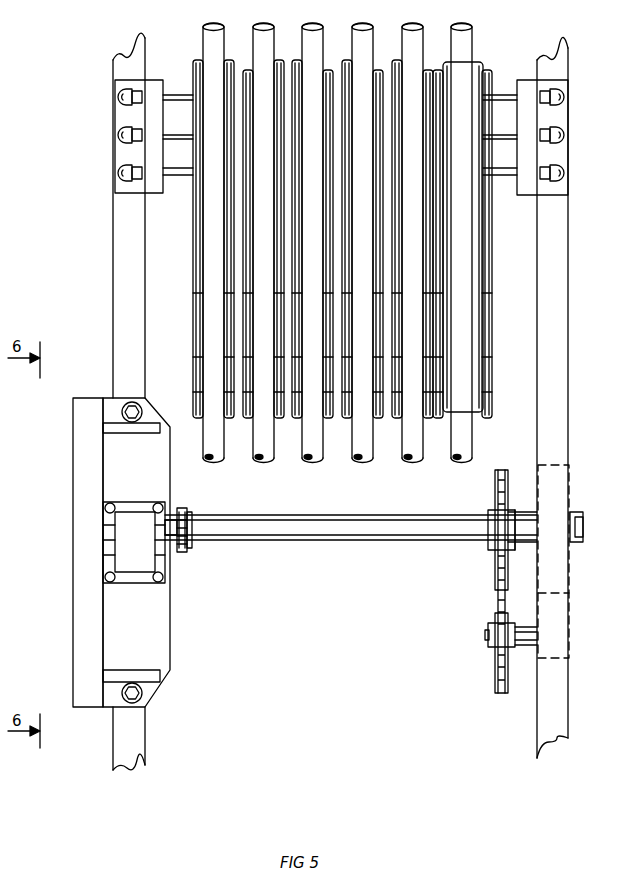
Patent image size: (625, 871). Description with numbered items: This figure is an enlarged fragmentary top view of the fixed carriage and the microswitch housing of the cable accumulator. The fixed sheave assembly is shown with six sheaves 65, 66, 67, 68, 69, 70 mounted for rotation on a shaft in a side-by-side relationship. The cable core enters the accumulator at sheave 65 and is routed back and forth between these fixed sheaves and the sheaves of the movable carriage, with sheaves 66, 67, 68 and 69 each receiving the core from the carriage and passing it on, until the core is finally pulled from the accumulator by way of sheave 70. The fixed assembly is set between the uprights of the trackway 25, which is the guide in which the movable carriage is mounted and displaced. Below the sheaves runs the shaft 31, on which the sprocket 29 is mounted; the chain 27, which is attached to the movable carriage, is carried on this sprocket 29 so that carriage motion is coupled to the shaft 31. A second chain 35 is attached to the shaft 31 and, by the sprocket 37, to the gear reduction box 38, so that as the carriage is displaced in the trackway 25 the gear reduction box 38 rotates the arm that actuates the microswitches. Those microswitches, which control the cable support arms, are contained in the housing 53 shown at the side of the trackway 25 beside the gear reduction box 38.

The trackway 25 is at (145, 247).
The chain 27 is at (497, 668).
The sprocket 29 is at (497, 565).
The shaft 31 is at (290, 540).
The chain 35 is at (185, 506).
The sprocket 37 is at (190, 550).
The gear reduction box 38 is at (128, 517).
The housing 53 is at (73, 617).
The sheave 65 is at (472, 422).
The sheave 66 is at (423, 422).
The sheave 67 is at (373, 422).
The sheave 68 is at (323, 422).
The sheave 69 is at (274, 422).
The sheave 70 is at (224, 422).